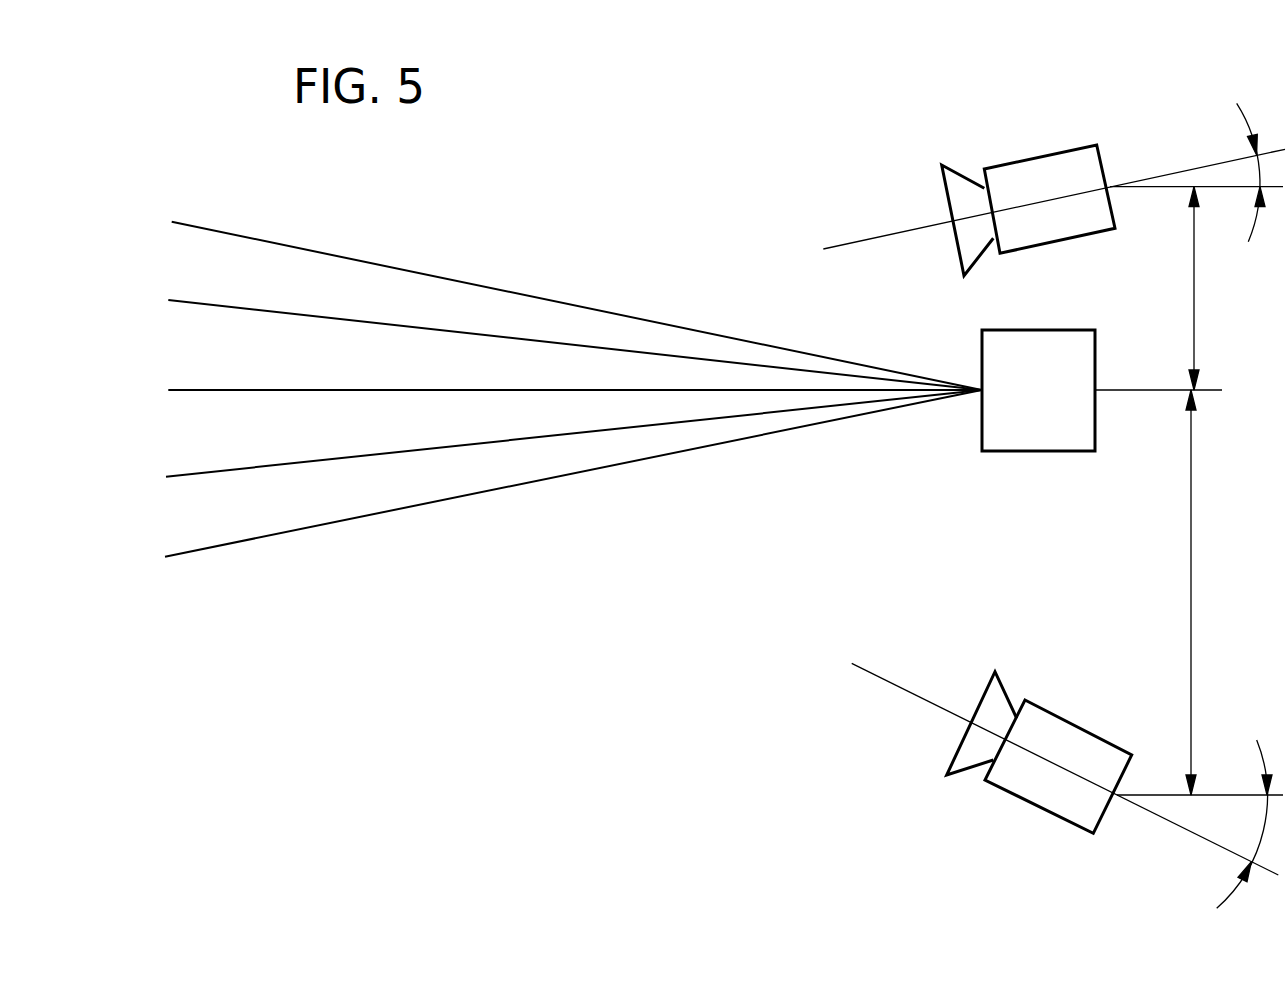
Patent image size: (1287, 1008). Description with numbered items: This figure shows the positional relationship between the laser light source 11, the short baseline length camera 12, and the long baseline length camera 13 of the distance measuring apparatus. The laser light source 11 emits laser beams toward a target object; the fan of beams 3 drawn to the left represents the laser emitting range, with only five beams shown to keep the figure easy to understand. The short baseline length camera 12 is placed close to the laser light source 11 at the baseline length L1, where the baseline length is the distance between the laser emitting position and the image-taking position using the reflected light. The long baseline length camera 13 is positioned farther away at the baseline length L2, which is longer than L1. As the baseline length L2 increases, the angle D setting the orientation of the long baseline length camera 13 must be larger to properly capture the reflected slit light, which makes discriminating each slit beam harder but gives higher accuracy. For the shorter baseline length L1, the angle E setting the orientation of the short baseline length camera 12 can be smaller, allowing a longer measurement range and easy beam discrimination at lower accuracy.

The laser light beams 3 is at (532, 296).
The laser light source 11 is at (1038, 453).
The short baseline length camera 12 is at (1043, 155).
The long baseline length camera 13 is at (1042, 810).
The baseline length of the short baseline length camera L1 is at (1214, 288).
The baseline length of the long baseline length camera L2 is at (1211, 592).
The angle for determining the set of the short baseline length camera E is at (1238, 172).
The angle for determining the set of the long baseline length camera D is at (1236, 824).